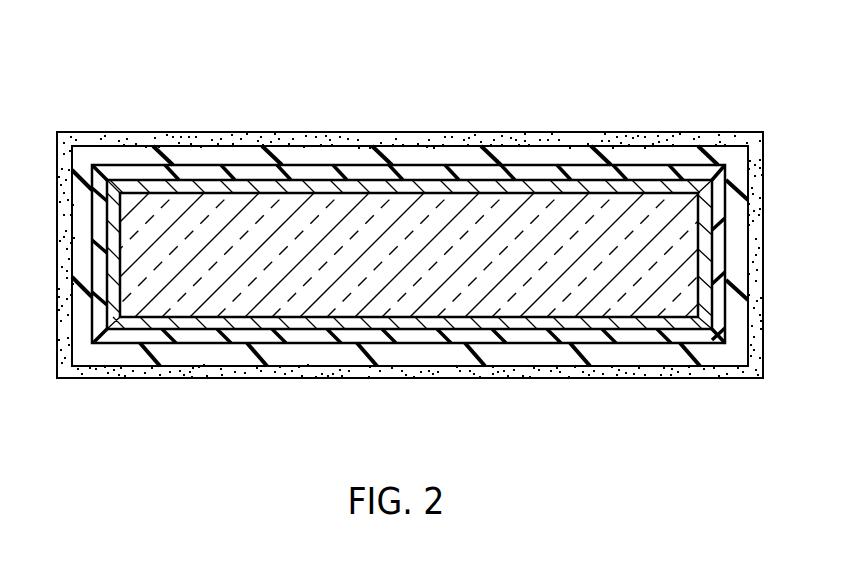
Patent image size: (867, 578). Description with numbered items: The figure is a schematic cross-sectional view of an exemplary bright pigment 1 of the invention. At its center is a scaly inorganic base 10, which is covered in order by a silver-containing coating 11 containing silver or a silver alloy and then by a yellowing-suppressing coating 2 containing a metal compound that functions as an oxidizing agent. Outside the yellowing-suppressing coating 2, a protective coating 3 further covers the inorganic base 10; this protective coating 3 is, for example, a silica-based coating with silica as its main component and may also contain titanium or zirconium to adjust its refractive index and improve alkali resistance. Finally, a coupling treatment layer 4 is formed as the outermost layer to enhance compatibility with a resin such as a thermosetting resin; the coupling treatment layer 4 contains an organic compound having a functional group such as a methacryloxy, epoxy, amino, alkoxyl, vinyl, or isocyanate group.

The bright pigment 1 is at (240, 95).
The scaly inorganic base 10 is at (324, 310).
The silver-containing coating 11 is at (434, 320).
The yellowing-suppressing coating 2 is at (537, 337).
The protective coating 3 is at (612, 355).
The coupling treatment layer 4 is at (697, 368).